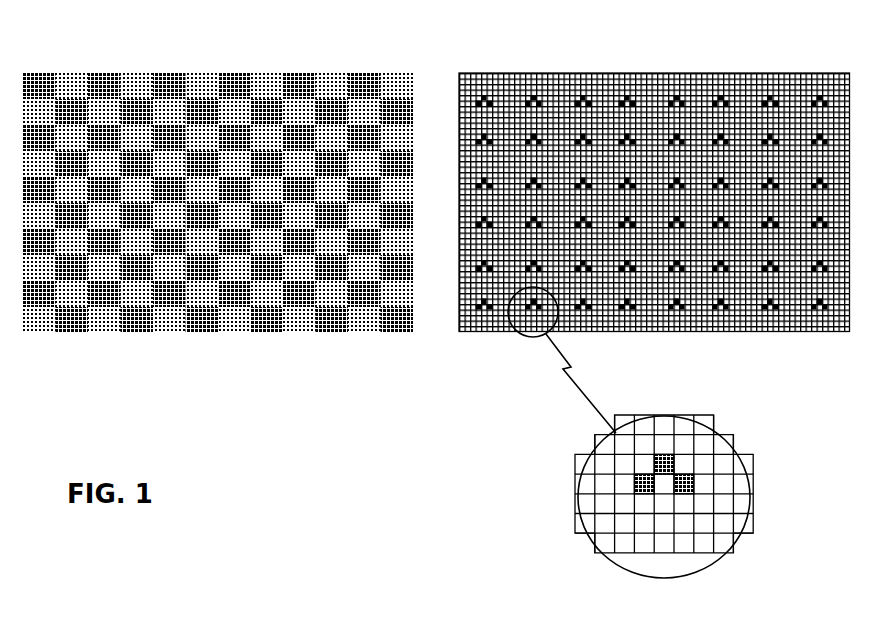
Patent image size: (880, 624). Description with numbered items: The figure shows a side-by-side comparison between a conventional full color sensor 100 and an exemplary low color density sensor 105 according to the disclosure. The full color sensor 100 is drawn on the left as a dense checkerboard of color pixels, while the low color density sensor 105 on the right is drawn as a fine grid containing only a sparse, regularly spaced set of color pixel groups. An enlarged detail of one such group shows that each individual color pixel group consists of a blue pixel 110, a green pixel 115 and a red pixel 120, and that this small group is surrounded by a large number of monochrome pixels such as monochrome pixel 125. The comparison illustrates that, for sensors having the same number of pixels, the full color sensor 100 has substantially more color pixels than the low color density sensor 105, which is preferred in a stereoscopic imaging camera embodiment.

The full color sensor 100 is at (49, 73).
The low color density sensor 105 is at (476, 73).
The blue pixel 110 is at (641, 487).
The green pixel 115 is at (667, 460).
The red pixel 120 is at (689, 485).
The monochrome pixel 125 is at (723, 522).